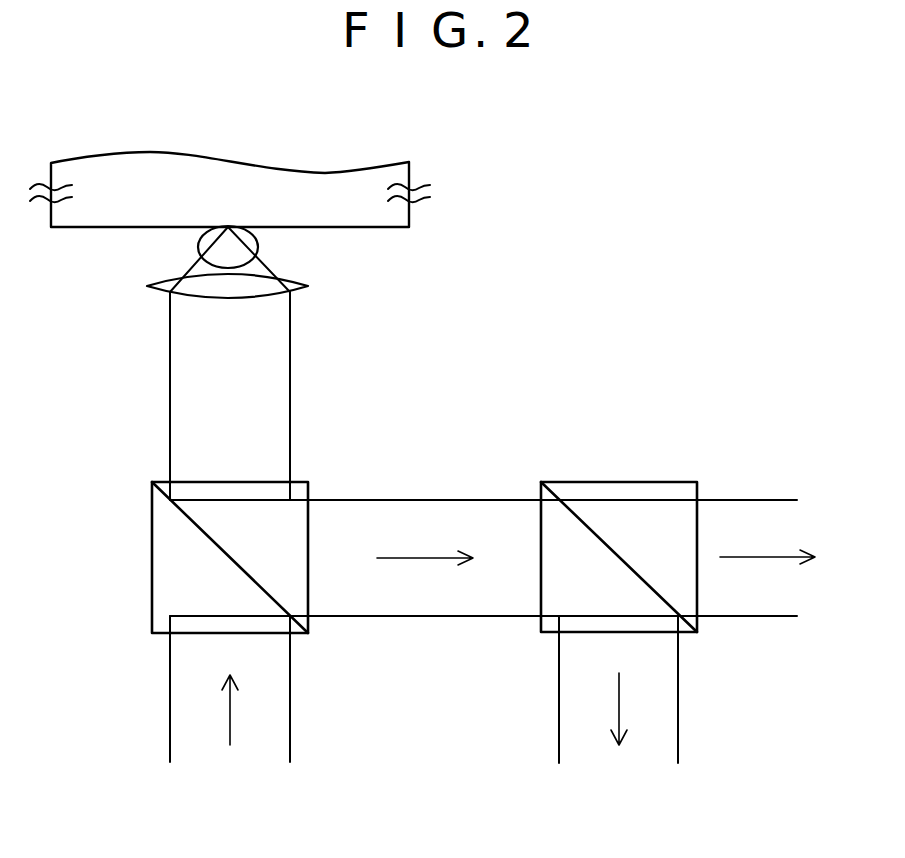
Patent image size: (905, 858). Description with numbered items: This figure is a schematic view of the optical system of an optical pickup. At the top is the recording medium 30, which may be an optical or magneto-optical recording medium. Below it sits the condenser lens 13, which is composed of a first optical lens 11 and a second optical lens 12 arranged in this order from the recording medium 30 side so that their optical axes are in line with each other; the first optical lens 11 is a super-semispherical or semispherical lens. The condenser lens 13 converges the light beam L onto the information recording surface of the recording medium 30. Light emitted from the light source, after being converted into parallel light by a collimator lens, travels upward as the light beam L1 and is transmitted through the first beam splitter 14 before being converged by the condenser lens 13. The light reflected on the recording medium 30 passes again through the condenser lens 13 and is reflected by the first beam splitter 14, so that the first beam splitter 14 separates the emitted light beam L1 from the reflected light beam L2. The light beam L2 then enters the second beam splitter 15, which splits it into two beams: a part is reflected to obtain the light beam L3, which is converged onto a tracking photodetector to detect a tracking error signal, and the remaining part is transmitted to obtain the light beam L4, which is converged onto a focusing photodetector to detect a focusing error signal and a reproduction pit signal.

The recording medium 30 is at (337, 185).
The first optical lens 11 is at (258, 242).
The second optical lens 12 is at (308, 287).
The condenser lens 13 is at (353, 266).
The first beam splitter 14 is at (270, 540).
The second beam splitter 15 is at (660, 540).
The light beam L is at (290, 378).
The light beam emitted from the light source L1 is at (170, 706).
The light beam reflected on the recording medium L2 is at (405, 616).
The light beam reflected by the second beam splitter L3 is at (680, 740).
The light beam transmitted through the second beam splitter L4 is at (760, 617).